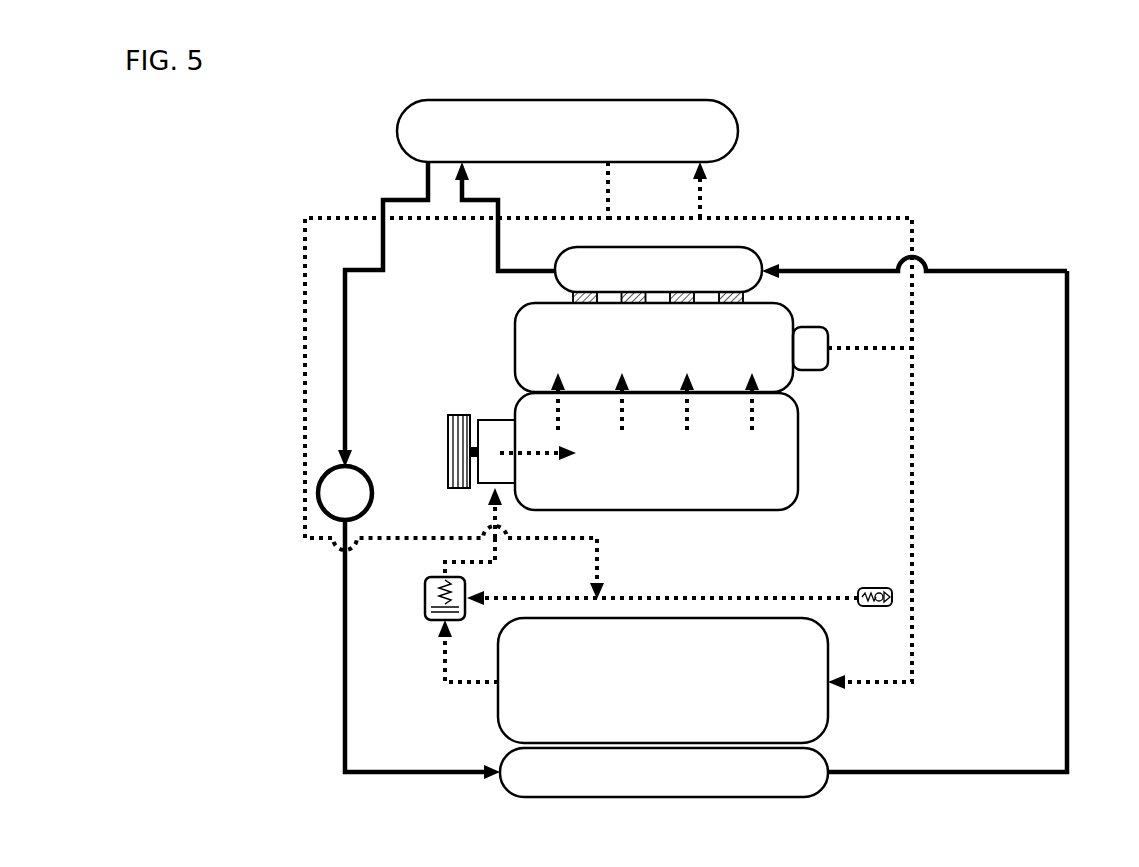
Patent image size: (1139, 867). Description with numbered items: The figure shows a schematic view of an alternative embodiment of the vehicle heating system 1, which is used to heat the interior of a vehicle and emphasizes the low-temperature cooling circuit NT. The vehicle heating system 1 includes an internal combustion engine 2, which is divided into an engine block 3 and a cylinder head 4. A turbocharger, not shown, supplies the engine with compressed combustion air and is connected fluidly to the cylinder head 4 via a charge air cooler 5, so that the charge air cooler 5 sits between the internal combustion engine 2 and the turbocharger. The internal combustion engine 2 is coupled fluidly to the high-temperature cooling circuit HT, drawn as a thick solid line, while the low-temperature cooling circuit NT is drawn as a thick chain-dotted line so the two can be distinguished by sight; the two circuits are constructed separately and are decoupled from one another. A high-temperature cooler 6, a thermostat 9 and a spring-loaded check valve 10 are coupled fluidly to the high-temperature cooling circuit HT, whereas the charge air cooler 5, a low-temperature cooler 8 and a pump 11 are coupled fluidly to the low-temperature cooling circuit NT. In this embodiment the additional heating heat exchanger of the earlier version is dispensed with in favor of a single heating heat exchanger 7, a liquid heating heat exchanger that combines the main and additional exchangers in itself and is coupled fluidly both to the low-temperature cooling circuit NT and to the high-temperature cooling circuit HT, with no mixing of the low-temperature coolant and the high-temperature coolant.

The vehicle heating system 1 is at (1024, 184).
The internal combustion engine 2 is at (623, 365).
The engine block 3 is at (773, 490).
The cylinder head 4 is at (527, 349).
The charge air cooler 5 is at (679, 261).
The high-temperature cooler 6 is at (813, 708).
The heating heat exchanger 7 is at (722, 140).
The low-temperature cooler 8 is at (518, 766).
The thermostat 9 is at (413, 636).
The spring-loaded check valve 10 is at (846, 586).
The pump 11 is at (353, 478).
The high-temperature cooling circuit HT is at (915, 437).
The low-temperature cooling circuit NT is at (1062, 668).